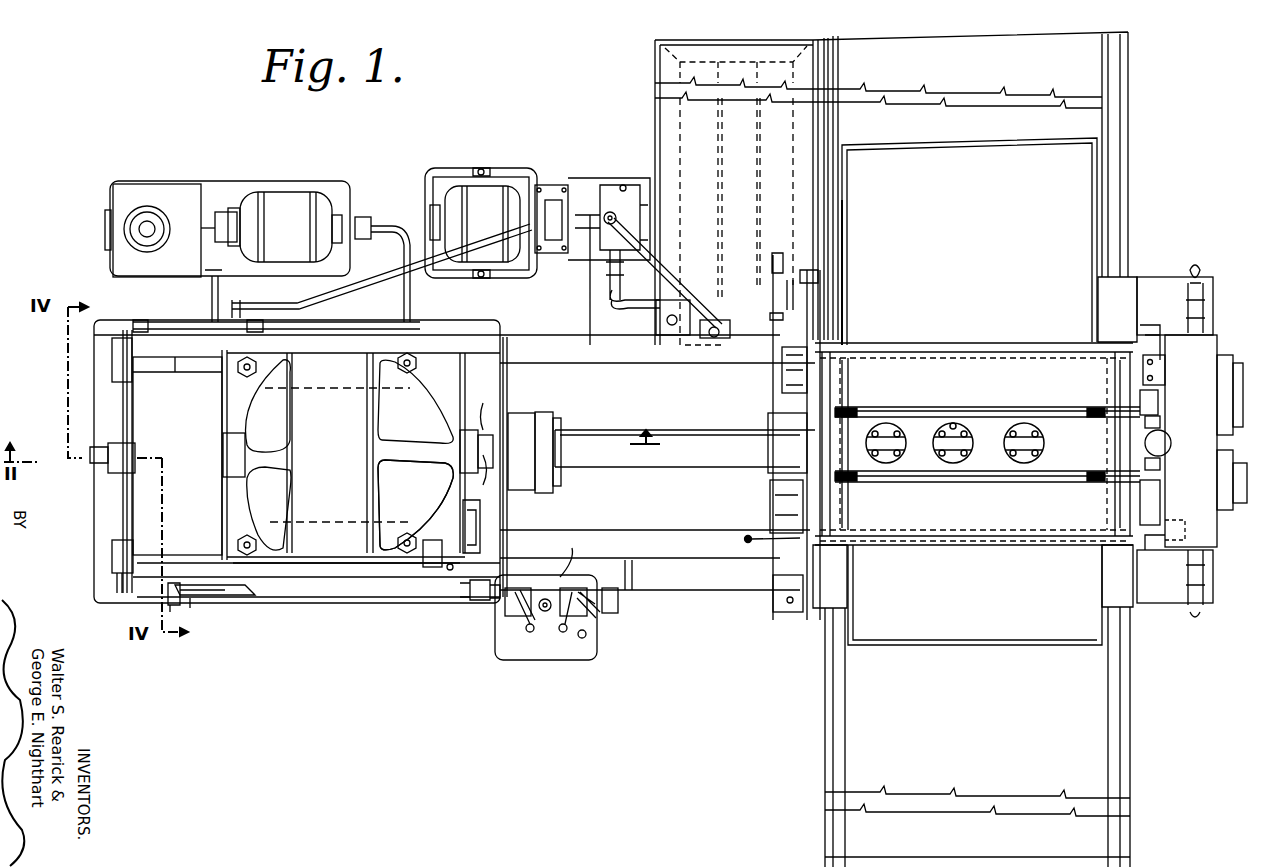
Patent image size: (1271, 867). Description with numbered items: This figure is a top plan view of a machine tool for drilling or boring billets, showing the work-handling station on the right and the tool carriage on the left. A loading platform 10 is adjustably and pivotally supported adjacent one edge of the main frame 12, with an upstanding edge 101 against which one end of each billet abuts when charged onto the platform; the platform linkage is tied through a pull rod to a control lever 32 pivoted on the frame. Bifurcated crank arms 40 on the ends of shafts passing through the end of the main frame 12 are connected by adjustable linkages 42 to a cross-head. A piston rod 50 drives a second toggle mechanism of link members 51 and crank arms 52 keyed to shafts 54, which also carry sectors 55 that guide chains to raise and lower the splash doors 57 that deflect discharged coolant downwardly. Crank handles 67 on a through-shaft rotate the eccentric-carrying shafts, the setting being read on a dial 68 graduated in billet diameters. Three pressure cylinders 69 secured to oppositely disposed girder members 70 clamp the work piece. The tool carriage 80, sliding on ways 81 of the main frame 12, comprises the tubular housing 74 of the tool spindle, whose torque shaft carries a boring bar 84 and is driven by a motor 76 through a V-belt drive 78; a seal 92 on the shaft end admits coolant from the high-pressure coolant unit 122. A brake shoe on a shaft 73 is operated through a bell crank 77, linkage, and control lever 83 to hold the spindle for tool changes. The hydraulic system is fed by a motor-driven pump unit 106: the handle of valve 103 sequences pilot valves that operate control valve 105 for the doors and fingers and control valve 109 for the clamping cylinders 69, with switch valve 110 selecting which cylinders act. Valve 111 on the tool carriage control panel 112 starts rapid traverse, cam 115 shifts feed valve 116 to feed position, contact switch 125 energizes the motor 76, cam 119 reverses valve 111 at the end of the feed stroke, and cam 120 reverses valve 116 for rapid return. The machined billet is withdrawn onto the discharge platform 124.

The loading platform 10 is at (985, 240).
The main frame 12 is at (620, 496).
The control lever 32 is at (790, 612).
The bifurcated crank arms 40 is at (1152, 325).
The adjustable linkages 42 is at (1160, 512).
The piston rod 50 is at (1171, 443).
The link members 51 is at (1160, 425).
The crank arms 52 is at (1160, 402).
The shafts 54 is at (812, 468).
The sectors 55 is at (842, 508).
The splash doors 57 is at (1008, 350).
The crank handle 67 is at (1200, 283).
The dial 68 is at (1232, 365).
The pressure cylinders 69 is at (1008, 427).
The girder members 70 is at (1057, 407).
The shaft 73 is at (445, 500).
The tubular housing 74 is at (540, 422).
The motor 76 is at (340, 446).
The bell crank 77 is at (483, 518).
The V-belt drive 78 is at (186, 420).
The tool carriage 80 is at (470, 364).
The ways 81 is at (698, 363).
The control lever 83 is at (448, 571).
The boring bar 84 is at (728, 456).
The seal 92 is at (110, 470).
The upstanding edge 101 is at (842, 213).
The valve 103 is at (795, 457).
The control valve 105 is at (1155, 370).
The pump unit 106 is at (240, 206).
The control valve 109 is at (800, 376).
The switch valve 110 is at (746, 541).
The valve 111 is at (562, 577).
The tool carriage control panel 112 is at (555, 645).
The cam 115 is at (480, 600).
The valve 116 is at (495, 600).
The cam 119 is at (220, 600).
The cam 120 is at (178, 605).
The high-pressure coolant unit 122 is at (448, 190).
The discharge platform 124 is at (975, 604).
The electric contact switch 125 is at (620, 604).